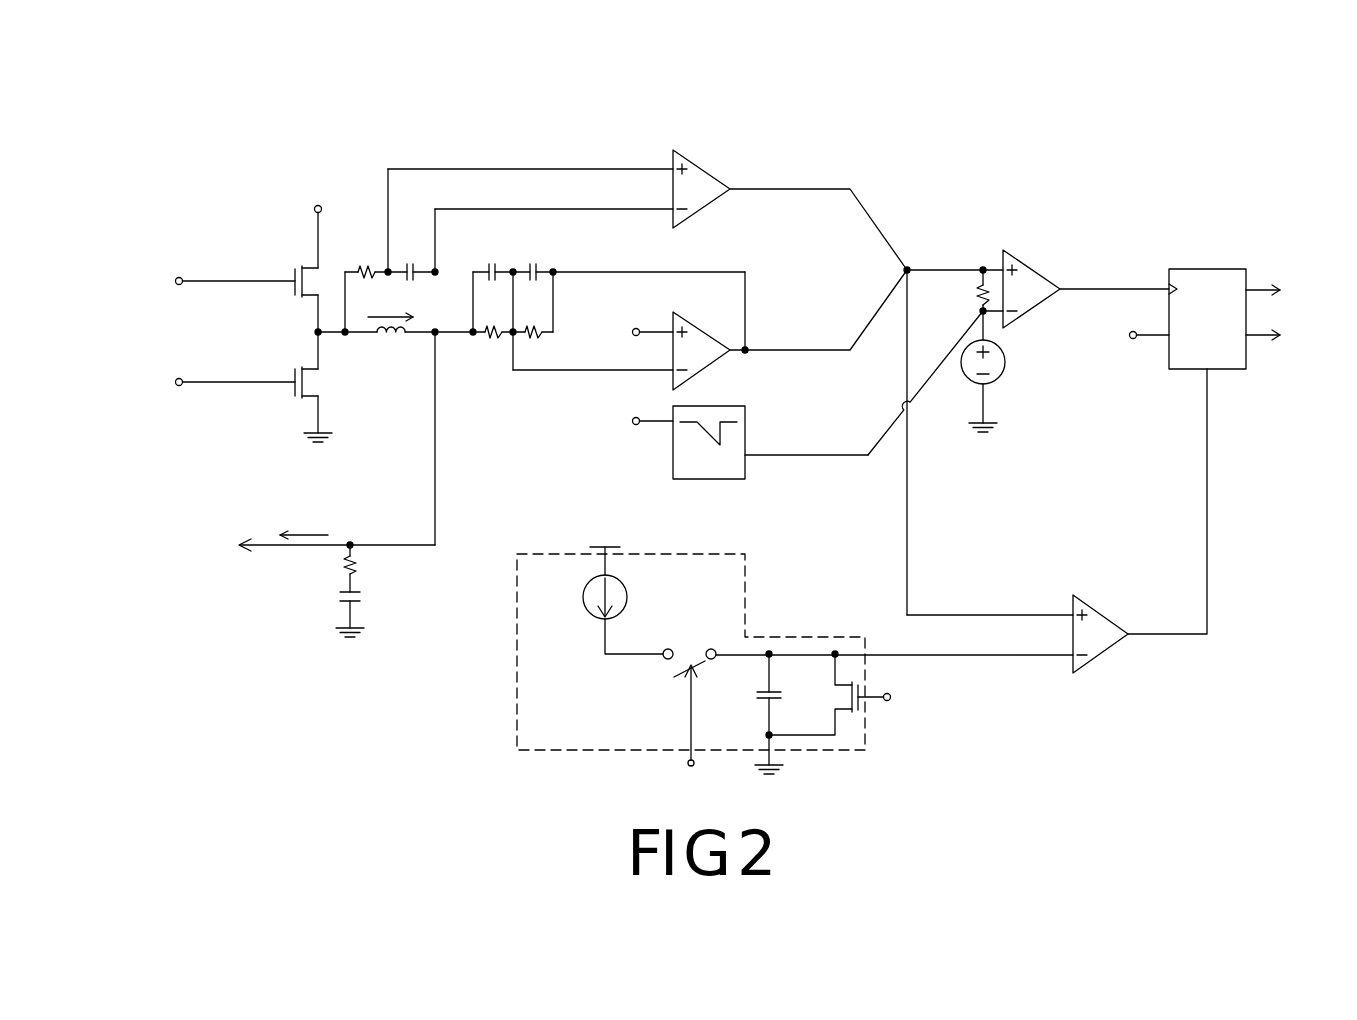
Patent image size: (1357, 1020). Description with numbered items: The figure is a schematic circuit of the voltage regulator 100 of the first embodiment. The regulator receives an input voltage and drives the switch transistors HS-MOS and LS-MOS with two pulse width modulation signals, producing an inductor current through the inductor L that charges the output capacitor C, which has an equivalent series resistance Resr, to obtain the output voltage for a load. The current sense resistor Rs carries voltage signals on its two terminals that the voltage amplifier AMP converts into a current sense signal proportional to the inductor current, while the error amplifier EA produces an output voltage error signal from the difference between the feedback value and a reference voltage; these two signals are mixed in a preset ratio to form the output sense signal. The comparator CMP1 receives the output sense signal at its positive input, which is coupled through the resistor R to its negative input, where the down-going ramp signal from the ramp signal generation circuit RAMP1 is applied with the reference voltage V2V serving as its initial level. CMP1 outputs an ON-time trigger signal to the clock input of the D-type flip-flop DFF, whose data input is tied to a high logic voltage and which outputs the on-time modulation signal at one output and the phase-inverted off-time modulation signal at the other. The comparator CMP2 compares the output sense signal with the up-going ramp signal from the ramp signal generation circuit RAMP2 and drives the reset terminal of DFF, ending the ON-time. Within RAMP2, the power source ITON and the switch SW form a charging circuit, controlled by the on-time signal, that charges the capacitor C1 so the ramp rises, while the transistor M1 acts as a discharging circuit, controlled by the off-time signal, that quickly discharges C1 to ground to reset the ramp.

The voltage regulator 100 is at (689, 59).
The switch transistor HS-MOS is at (274, 265).
The switch transistor LS-MOS is at (274, 396).
The inductor L is at (391, 346).
The current sense resistor Rs is at (365, 259).
The voltage amplifier AMP is at (701, 174).
The error amplifier EA is at (701, 351).
The resistor R is at (975, 290).
The reference voltage V2V is at (1005, 362).
The comparator CMP1 is at (1031, 273).
The comparator CMP2 is at (1098, 619).
The ramp signal generation circuit RAMP1 is at (709, 442).
The ramp signal generation circuit RAMP2 is at (517, 731).
The D-type flip-flop DFF is at (1207, 303).
The equivalent series resistance Resr is at (379, 565).
The output capacitor C is at (359, 599).
The power source ITON is at (577, 597).
The switch SW is at (689, 688).
The capacitor C1 is at (759, 697).
The transistor M1 is at (832, 697).